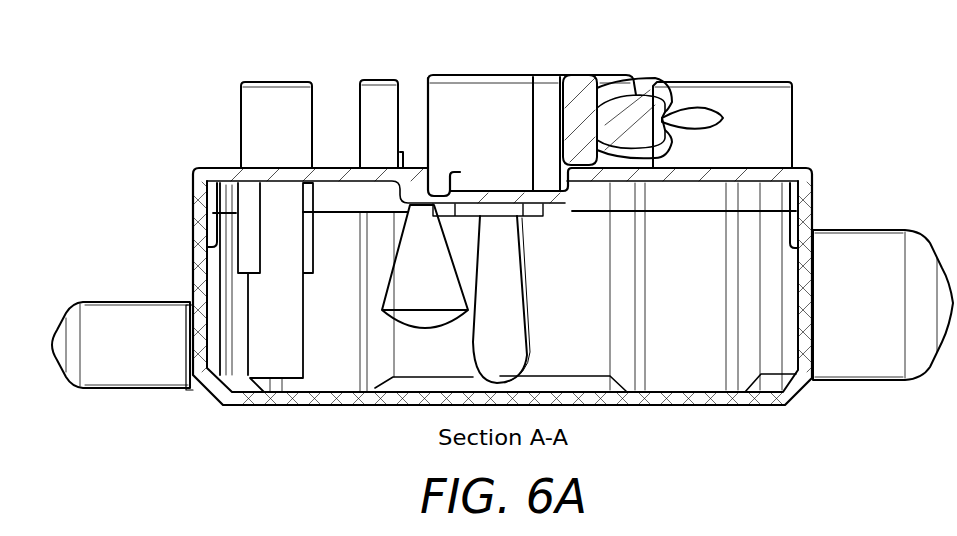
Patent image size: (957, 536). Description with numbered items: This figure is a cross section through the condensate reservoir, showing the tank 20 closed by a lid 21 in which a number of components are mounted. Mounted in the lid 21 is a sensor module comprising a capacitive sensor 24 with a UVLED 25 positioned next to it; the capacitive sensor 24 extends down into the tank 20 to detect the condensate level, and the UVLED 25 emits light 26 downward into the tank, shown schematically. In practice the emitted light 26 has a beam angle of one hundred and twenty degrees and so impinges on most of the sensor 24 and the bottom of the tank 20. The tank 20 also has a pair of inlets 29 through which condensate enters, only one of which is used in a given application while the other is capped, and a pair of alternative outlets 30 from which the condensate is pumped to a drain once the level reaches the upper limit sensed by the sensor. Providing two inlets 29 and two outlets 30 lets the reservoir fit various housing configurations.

The tank 20 is at (725, 406).
The lid 21 is at (213, 167).
The capacitive sensor 24 is at (512, 313).
The UVLED 25 is at (433, 191).
The emitted light 26 is at (400, 292).
The inlet 29 is at (752, 97).
The outlet 30 is at (283, 97).